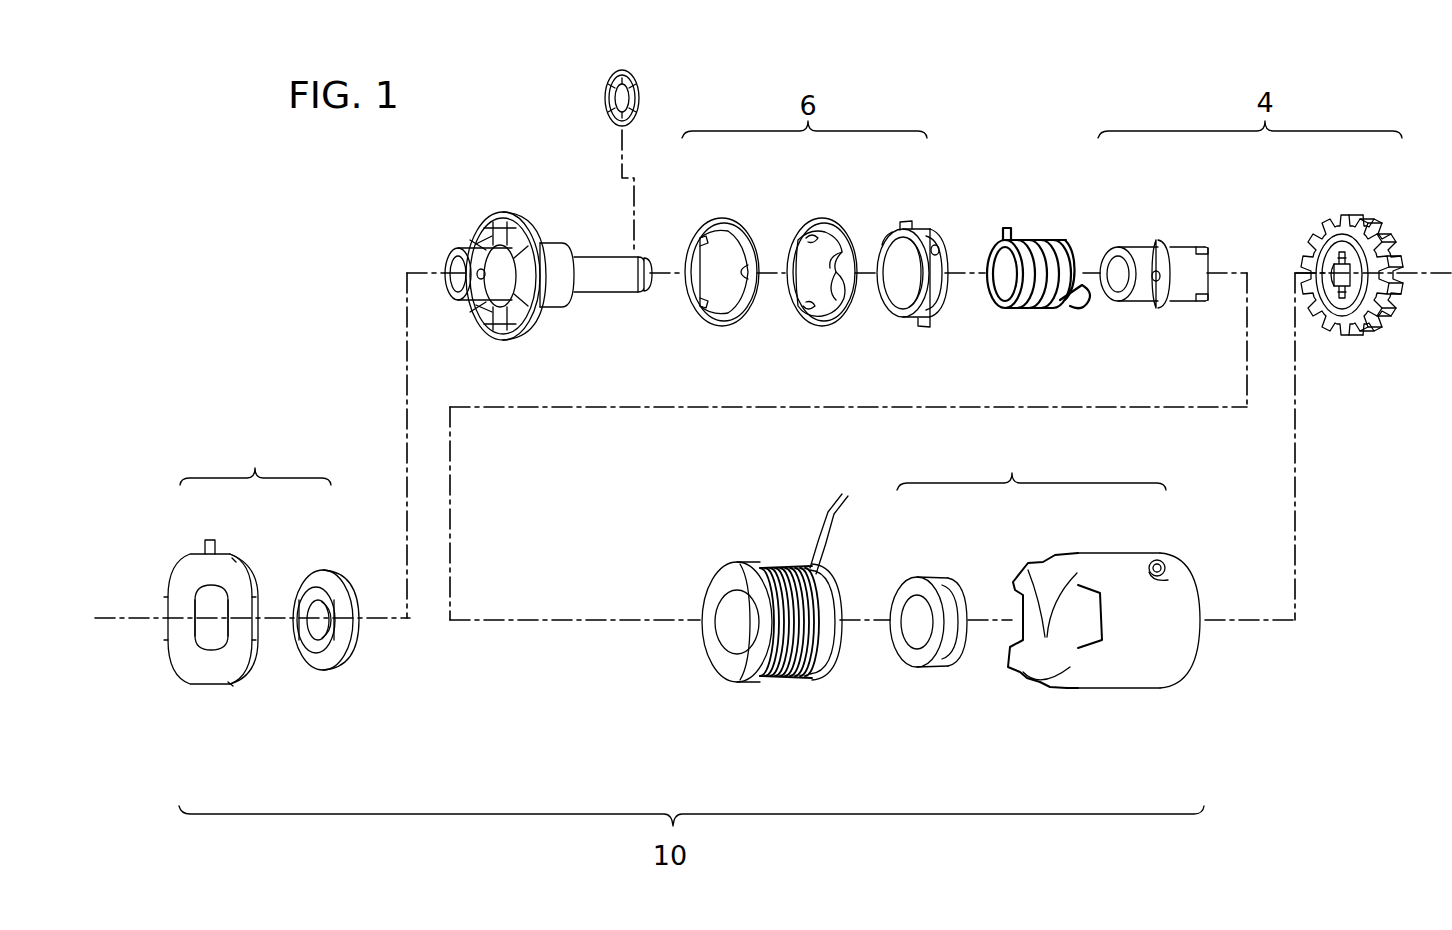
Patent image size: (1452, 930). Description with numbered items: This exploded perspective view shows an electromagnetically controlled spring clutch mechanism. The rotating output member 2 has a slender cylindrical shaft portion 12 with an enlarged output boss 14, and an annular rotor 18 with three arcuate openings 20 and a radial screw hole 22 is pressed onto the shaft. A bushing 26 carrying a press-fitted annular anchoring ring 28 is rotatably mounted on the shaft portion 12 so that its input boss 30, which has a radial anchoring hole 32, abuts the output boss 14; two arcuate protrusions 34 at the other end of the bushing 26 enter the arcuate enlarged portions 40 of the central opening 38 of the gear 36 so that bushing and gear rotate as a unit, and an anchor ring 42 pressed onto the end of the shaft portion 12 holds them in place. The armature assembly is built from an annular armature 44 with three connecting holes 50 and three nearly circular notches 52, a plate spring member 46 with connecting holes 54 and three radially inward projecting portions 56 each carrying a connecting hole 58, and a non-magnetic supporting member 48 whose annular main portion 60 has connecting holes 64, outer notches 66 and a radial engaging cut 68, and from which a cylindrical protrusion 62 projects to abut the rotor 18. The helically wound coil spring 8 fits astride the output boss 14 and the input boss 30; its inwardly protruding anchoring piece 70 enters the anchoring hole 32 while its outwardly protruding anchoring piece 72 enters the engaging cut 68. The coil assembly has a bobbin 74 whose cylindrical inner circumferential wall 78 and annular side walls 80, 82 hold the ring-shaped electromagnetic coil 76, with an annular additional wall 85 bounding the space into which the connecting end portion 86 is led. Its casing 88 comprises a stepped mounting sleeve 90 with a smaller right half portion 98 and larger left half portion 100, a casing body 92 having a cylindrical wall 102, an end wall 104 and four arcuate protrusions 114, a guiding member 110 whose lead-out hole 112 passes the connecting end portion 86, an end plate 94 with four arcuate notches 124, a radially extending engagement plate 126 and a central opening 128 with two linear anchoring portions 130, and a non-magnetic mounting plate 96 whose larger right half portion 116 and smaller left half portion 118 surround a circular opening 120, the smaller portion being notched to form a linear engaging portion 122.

The rotating output member 2 is at (522, 268).
The coil spring 8 is at (1038, 262).
The shaft portion 12 is at (600, 294).
The output boss 14 is at (546, 245).
The rotor 18 is at (497, 210).
The arcuate openings 20 is at (478, 242).
The screw hole 22 is at (478, 280).
The bushing 26 is at (1162, 287).
The annular anchoring ring 28 is at (1163, 304).
The input boss 30 is at (1128, 250).
The anchoring hole 32 is at (1153, 281).
The arcuate protrusions 34 is at (1201, 248).
The gear 36 is at (1361, 299).
The opening 38 is at (1334, 300).
The arcuate enlarged portions 40 is at (1343, 252).
The anchor ring 42 is at (624, 70).
The armature 44 is at (709, 277).
The spring member 46 is at (817, 280).
The supporting member 48 is at (934, 265).
The connecting holes 50 is at (728, 232).
The notches 52 is at (702, 240).
The connecting holes 54 is at (831, 233).
The projecting portions 56 is at (812, 238).
The connecting hole 58 is at (838, 258).
The annular main portion 60 is at (946, 292).
The cylindrical protrusion 62 is at (938, 246).
The connecting holes 64 is at (940, 264).
The notches 66 is at (912, 224).
The engaging cut 68 is at (893, 232).
The anchoring protruding piece 70 is at (1082, 308).
The anchoring protruding piece 72 is at (1009, 240).
The bobbin 74 is at (726, 684).
The electromagnetic coil 76 is at (773, 627).
The cylindrical inner circumferential wall 78 is at (736, 650).
The annular side wall 80 is at (778, 568).
The annular side wall 82 is at (708, 648).
The annular additional wall 85 is at (838, 582).
The connecting end portion 86 is at (836, 516).
The casing 88 is at (673, 460).
The mounting sleeve 90 is at (905, 626).
The casing body 92 is at (1132, 629).
The end plate 94 is at (176, 630).
The mounting plate 96 is at (351, 636).
The right half portion 98 is at (950, 602).
The left half portion 100 is at (906, 650).
The cylindrical wall 102 is at (1106, 554).
The end wall 104 is at (1192, 664).
The guiding member 110 is at (1166, 564).
The lead-out hole 112 is at (1168, 578).
The arcuate protrusions 114 is at (1038, 600).
The right half portion 116 is at (344, 580).
The left half portion 118 is at (314, 654).
The circular opening 120 is at (332, 626).
The engaging portion 122 is at (299, 604).
The arcuate notches 124 is at (238, 574).
The key tab 126 is at (208, 540).
The opening 128 is at (196, 586).
The anchoring portions 130 is at (195, 620).